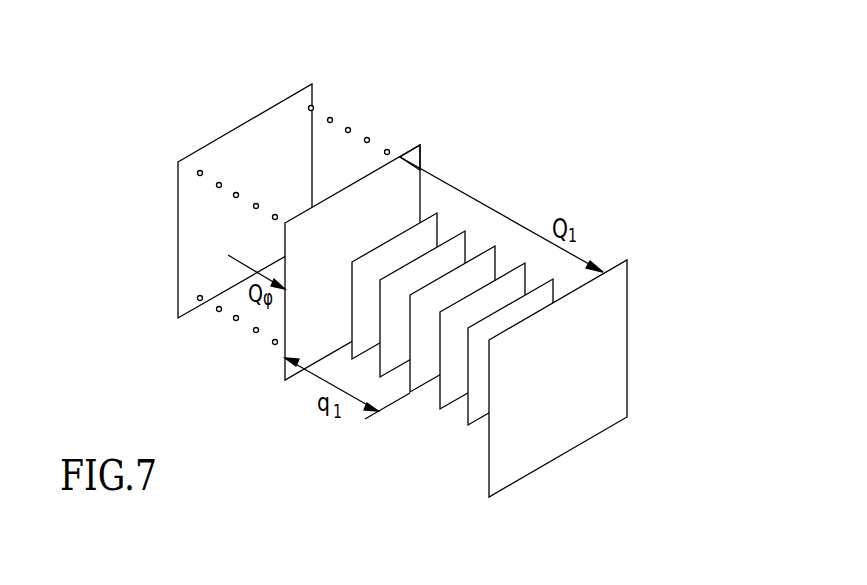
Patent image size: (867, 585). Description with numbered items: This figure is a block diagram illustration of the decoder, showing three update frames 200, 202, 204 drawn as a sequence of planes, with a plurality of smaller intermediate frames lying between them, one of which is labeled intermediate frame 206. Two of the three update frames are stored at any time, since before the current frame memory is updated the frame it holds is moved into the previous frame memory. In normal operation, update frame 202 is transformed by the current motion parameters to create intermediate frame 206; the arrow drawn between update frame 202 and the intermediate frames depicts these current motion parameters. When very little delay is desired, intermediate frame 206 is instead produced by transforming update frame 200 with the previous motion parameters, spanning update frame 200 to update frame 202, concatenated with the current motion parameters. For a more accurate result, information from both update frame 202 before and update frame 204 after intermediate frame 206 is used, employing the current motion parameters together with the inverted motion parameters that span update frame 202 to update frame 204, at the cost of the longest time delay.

The update frame 200 is at (312, 84).
The update frame 202 is at (413, 147).
The update frame 204 is at (627, 282).
The intermediate frame 206 is at (495, 246).